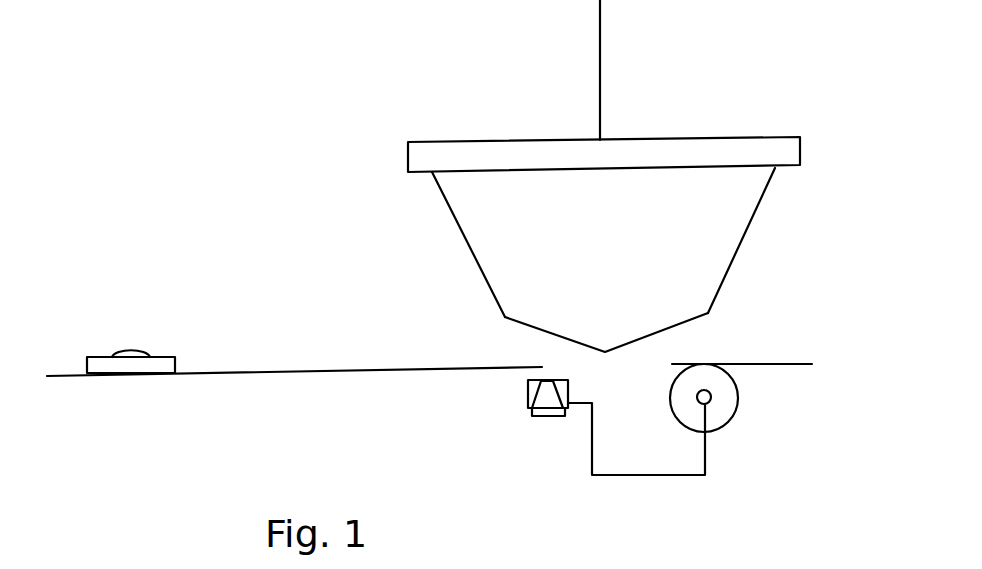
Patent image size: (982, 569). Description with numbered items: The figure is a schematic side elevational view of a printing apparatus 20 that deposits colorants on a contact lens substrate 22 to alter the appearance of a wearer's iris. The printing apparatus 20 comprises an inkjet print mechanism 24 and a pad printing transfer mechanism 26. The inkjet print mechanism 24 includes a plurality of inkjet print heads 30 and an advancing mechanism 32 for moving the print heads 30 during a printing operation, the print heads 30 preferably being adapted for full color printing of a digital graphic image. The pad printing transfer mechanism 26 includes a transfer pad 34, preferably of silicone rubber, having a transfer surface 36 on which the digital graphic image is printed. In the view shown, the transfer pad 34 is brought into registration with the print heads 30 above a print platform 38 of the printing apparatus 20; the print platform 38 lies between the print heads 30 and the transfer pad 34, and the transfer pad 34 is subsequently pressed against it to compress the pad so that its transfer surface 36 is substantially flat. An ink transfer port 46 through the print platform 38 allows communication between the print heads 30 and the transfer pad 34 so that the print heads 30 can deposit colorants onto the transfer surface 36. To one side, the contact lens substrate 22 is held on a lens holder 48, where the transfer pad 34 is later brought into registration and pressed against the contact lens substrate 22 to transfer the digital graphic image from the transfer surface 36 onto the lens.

The printing apparatus 20 is at (466, 110).
The pad printing transfer mechanism 26 is at (435, 240).
The transfer pad 34 is at (610, 246).
The transfer surface 36 is at (535, 333).
The print platform 38 is at (375, 365).
The lens holder 48 is at (170, 362).
The contact lens substrate 22 is at (132, 348).
The inkjet print heads 30 is at (527, 420).
The inkjet print mechanism 24 is at (600, 490).
The advancing mechanism 32 is at (748, 402).
The ink transfer port 46 is at (665, 363).